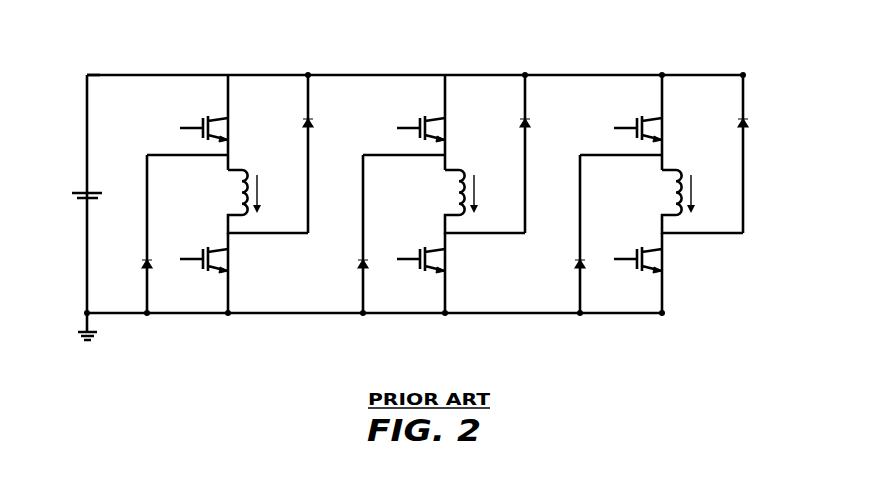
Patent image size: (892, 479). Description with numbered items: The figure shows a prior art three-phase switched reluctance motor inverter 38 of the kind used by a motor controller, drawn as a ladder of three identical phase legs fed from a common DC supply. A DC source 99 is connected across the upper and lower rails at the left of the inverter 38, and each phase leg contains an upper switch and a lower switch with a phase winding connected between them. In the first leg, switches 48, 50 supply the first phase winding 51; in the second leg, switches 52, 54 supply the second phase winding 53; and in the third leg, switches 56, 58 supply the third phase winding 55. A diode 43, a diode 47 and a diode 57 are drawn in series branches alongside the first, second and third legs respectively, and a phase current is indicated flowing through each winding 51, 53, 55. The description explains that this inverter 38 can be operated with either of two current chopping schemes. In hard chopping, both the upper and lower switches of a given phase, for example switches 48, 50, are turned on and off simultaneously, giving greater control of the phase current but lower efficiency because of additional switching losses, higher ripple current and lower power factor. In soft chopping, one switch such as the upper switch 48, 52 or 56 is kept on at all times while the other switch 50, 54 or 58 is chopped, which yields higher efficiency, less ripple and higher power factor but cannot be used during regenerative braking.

The three-phase SR motor inverter 38 is at (140, 54).
The DC voltage source 99 is at (80, 197).
The upper switch 48 is at (200, 122).
The lower switch 50 is at (203, 253).
The first phase winding 51 is at (243, 170).
The diode 43 is at (312, 122).
The upper switch 52 is at (418, 121).
The lower switch 54 is at (420, 253).
The second phase winding 53 is at (460, 170).
The diode 47 is at (529, 122).
The upper switch 56 is at (635, 121).
The lower switch 58 is at (637, 253).
The third phase winding 55 is at (678, 170).
The diode 57 is at (747, 122).